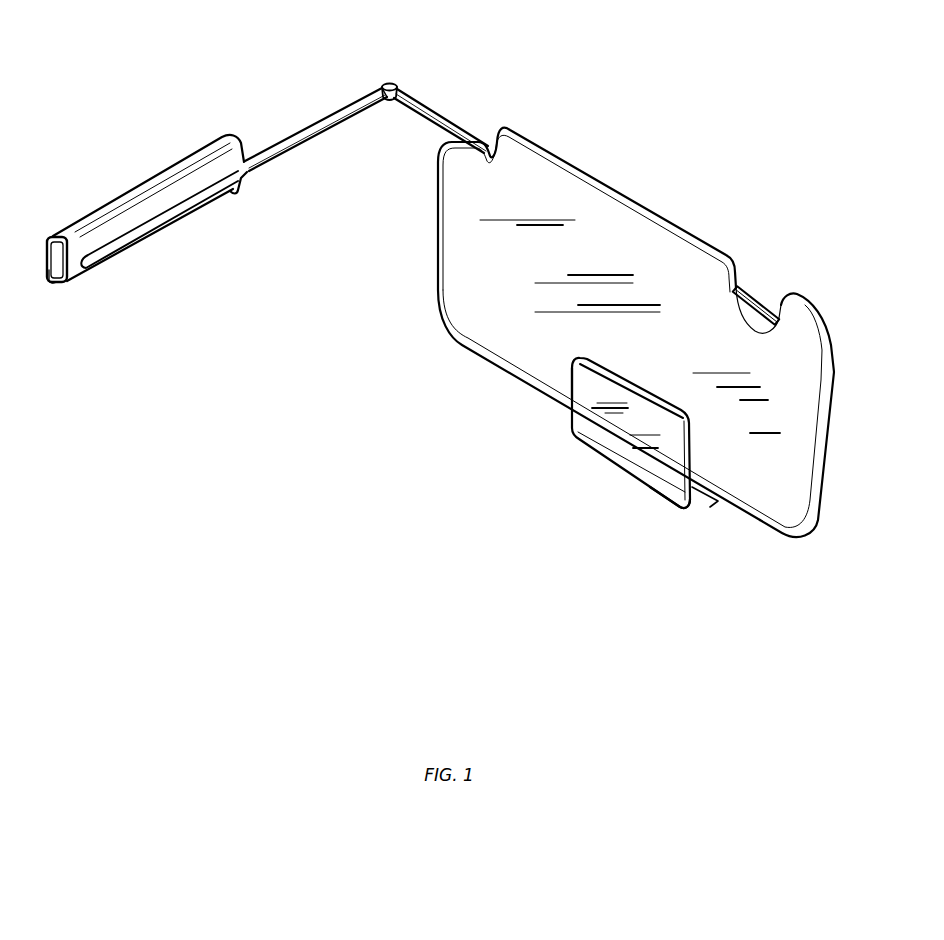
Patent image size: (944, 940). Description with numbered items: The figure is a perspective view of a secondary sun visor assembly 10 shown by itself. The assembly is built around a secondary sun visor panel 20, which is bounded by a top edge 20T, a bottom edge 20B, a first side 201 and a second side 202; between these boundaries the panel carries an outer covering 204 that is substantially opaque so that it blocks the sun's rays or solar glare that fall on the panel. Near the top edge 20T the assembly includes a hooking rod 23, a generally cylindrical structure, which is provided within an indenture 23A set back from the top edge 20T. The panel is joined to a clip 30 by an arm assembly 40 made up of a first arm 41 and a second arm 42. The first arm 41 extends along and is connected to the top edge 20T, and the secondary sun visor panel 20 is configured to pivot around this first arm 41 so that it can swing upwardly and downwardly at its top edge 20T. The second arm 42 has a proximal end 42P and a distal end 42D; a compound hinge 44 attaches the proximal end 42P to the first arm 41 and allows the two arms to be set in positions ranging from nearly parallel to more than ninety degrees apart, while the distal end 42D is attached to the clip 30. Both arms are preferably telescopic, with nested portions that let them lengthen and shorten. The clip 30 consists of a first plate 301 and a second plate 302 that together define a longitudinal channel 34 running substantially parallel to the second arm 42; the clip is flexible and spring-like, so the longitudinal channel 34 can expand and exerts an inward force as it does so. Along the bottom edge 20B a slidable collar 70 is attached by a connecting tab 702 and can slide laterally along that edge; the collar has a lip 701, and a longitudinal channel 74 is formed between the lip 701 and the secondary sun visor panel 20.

The secondary sun visor assembly 10 is at (395, 483).
The secondary sun visor panel 20 is at (441, 298).
The top edge 20T is at (653, 208).
The bottom edge 20B is at (564, 410).
The first side 201 is at (437, 232).
The second side 202 is at (829, 406).
The outer covering 204 is at (783, 500).
The hooking rod 23 is at (760, 298).
The indenture 23A is at (747, 313).
The clip 30 is at (108, 199).
The first plate 301 is at (72, 282).
The second plate 302 is at (50, 283).
The longitudinal channel 34 is at (55, 233).
The arm assembly 40 is at (297, 137).
The first arm 41 is at (456, 116).
The second arm 42 is at (284, 152).
The proximal end 42P is at (380, 88).
The distal end 42D is at (92, 272).
The compound hinge 44 is at (394, 83).
The slidable collar 70 is at (603, 489).
The lip 701 is at (573, 382).
The connecting tab 702 is at (707, 512).
The longitudinal channel 74 is at (707, 457).